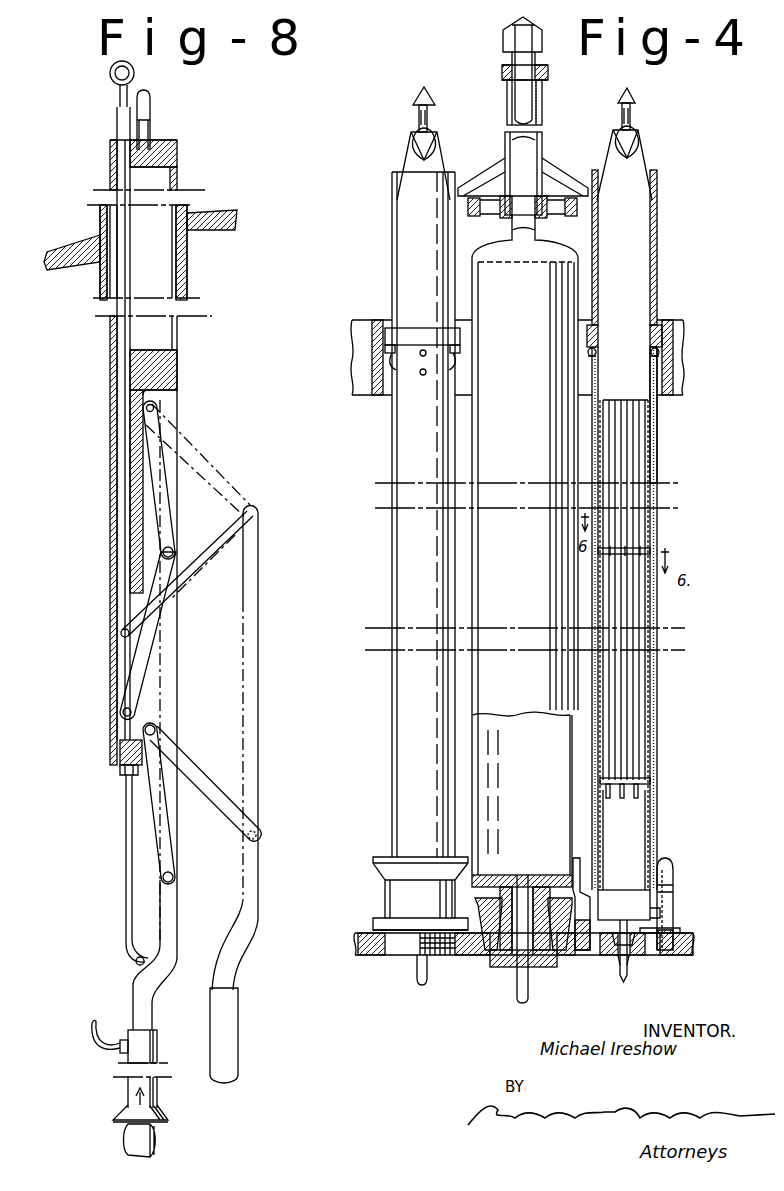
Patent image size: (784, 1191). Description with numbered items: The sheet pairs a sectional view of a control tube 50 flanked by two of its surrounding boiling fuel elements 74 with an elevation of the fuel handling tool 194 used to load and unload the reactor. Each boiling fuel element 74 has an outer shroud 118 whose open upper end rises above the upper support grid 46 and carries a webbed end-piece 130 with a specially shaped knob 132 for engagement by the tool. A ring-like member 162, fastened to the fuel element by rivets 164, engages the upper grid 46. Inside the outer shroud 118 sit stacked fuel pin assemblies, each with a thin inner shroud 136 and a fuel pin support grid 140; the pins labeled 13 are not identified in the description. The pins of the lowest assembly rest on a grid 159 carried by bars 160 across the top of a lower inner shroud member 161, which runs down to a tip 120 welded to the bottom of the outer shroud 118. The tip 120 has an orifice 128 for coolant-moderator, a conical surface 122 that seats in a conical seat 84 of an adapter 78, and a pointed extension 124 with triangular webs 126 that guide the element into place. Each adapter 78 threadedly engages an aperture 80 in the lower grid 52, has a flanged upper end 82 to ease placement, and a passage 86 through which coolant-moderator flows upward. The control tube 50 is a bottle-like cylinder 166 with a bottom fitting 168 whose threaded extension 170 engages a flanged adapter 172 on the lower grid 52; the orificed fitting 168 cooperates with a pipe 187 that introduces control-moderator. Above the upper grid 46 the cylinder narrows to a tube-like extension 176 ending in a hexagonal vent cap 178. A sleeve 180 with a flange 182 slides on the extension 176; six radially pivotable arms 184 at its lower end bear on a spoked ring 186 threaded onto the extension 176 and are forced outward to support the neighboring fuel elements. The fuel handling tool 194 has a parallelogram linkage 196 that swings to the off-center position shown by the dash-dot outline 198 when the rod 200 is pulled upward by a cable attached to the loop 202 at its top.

In FIG. 8, the loop 202 is at (118, 84).
In FIG. 8, the rod 200 is at (125, 567).
In FIG. 8, the fuel handling tool 194 is at (193, 190).
In FIG. 8, the parallelogram linkage 196 is at (173, 521).
In FIG. 8, the dash-dot outline 198 is at (262, 622).
In FIG. 8, the knob 132 is at (150, 1106).
In FIG. 4, the knob 132 is at (630, 115).
In FIG. 8, the boiling fuel element 74 is at (115, 1145).
In FIG. 4, the boiling fuel element 74 is at (383, 685).
In FIG. 4, the webbed end-piece 130 is at (640, 153).
In FIG. 4, the grid 46 is at (683, 381).
In FIG. 4, the ring-like member 162 is at (430, 320).
In FIG. 4, the rivets 164 is at (418, 360).
In FIG. 4, the vent cap 178 is at (503, 45).
In FIG. 4, the tube-like extension 176 is at (512, 103).
In FIG. 4, the flange 182 is at (502, 74).
In FIG. 4, the sleeve 180 is at (543, 111).
In FIG. 4, the radially pivotable arms 184 is at (472, 188).
In FIG. 4, the spoked ring 186 is at (490, 210).
In FIG. 4, the bottle-like cylinder 166 is at (540, 465).
In FIG. 4, the control tube 50 is at (468, 478).
In FIG. 4, the tubes 13 is at (625, 441).
In FIG. 4, the inner shroud 136 is at (660, 463).
In FIG. 4, the fuel pin support grid 140 is at (642, 552).
In FIG. 4, the outer shroud 118 is at (657, 716).
In FIG. 4, the grid 159 is at (650, 782).
In FIG. 4, the bars 160 is at (640, 794).
In FIG. 4, the lower inner shroud member 161 is at (655, 823).
In FIG. 4, the orifice 128 is at (624, 905).
In FIG. 4, the tip 120 is at (639, 975).
In FIG. 4, the pointed extension 124 is at (632, 960).
In FIG. 4, the triangular webs 126 is at (634, 945).
In FIG. 4, the flanged adapter 172 is at (392, 899).
In FIG. 4, the second grid 52 is at (380, 960).
In FIG. 4, the apertures 80 is at (690, 953).
In FIG. 4, the bottom fitting 168 is at (498, 880).
In FIG. 4, the threaded extension 170 is at (490, 928).
In FIG. 4, the pipe 187 is at (529, 990).
In FIG. 4, the passage 86 is at (590, 947).
In FIG. 4, the flanged upper end 82 is at (670, 862).
In FIG. 4, the adapter 78 is at (680, 895).
In FIG. 4, the conical seat 84 is at (656, 913).
In FIG. 4, the conical surface 122 is at (650, 935).